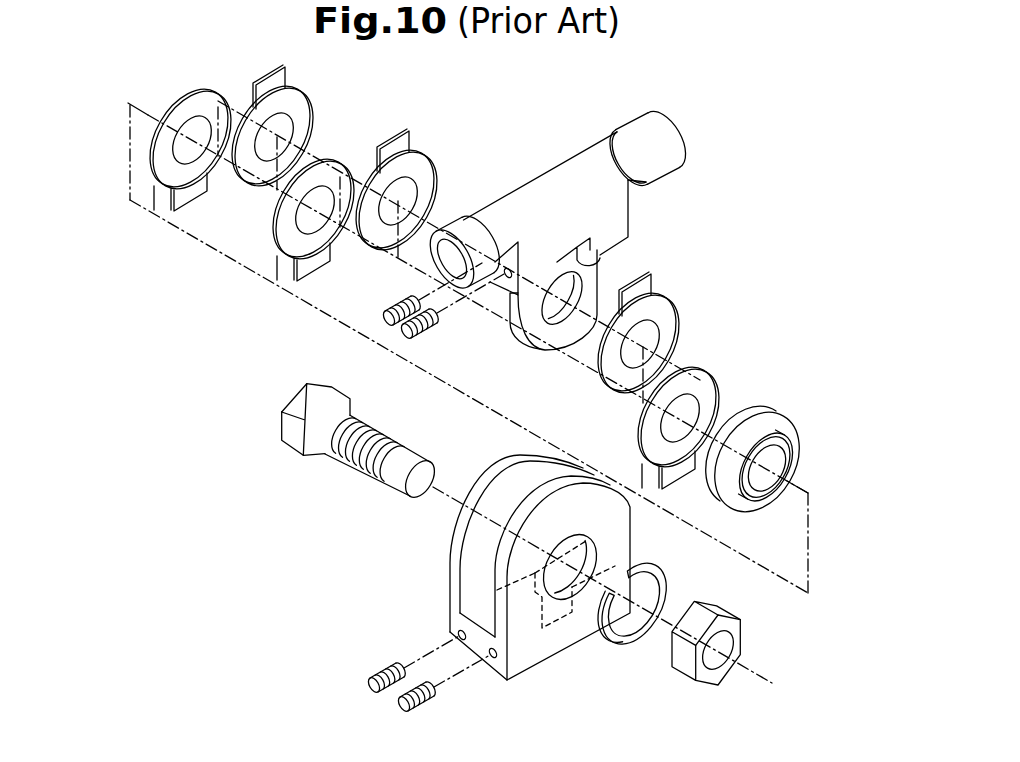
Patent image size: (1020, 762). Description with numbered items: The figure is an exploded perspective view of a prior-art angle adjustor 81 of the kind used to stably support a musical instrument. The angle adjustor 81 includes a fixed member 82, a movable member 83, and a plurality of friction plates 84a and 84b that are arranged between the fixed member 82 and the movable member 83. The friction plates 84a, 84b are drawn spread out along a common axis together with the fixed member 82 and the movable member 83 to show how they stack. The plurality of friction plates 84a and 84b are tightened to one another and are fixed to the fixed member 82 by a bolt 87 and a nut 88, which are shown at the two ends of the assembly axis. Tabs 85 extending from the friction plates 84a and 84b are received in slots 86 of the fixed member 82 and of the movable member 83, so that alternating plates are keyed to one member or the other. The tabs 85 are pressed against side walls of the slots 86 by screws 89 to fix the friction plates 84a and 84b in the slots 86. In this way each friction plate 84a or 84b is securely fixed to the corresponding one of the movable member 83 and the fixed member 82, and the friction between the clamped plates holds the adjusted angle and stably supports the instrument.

The angle adjustor 81 is at (848, 173).
The fixed member 82 is at (623, 540).
The movable member 83 is at (577, 167).
The friction plates 84a is at (154, 205).
The friction plates 84b is at (313, 99).
The tabs 85 is at (661, 293).
The slots 86 is at (603, 251).
The bolt 87 is at (281, 432).
The nut 88 is at (745, 633).
The screws 89 is at (403, 331).